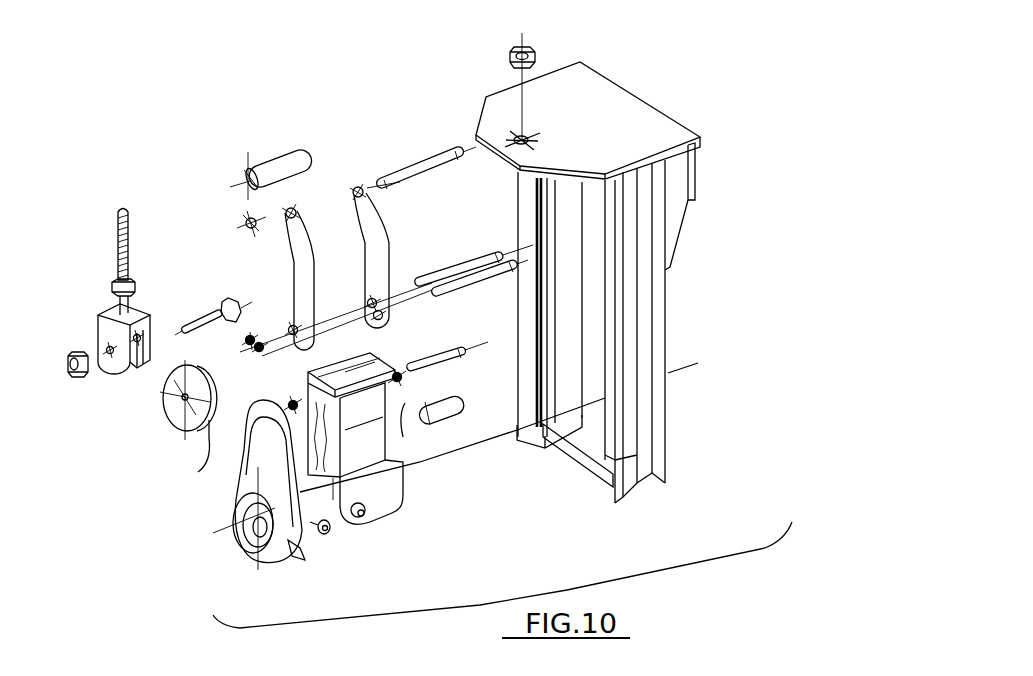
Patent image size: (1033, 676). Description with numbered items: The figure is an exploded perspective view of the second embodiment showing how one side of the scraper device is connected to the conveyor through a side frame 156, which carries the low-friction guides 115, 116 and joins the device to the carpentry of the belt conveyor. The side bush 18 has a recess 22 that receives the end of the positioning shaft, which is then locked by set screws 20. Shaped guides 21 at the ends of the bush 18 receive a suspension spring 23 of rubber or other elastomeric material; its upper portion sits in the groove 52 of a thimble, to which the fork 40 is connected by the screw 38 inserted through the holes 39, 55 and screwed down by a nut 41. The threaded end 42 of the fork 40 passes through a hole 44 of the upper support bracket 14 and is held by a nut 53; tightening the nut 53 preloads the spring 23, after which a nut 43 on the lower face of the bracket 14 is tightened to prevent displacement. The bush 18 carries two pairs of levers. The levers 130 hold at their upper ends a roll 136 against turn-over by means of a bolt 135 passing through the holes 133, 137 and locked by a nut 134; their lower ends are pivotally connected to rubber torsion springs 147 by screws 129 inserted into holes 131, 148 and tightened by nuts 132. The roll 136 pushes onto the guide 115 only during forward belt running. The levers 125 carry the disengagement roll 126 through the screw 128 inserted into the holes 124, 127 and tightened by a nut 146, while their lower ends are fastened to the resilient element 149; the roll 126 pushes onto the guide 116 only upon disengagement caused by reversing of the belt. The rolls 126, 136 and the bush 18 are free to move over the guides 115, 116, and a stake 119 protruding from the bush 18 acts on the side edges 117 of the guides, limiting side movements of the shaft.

The upper support bracket 14 is at (612, 112).
The side frame 156 is at (653, 409).
The guide 115 is at (566, 416).
The guide 116 is at (602, 438).
The side edge of the guides 117 is at (603, 438).
The nut 53 is at (533, 47).
The hole 44 is at (528, 138).
The bolt 135 is at (418, 172).
The roll 136 is at (295, 172).
The hole 137 is at (243, 172).
The nut 134 is at (245, 221).
The levers 130 is at (381, 270).
The holes 133 is at (358, 188).
The holes 131 is at (377, 313).
The nuts 132 is at (259, 343).
The screws 129 is at (475, 278).
The screw 128 is at (460, 351).
The levers 125 is at (323, 380).
The holes 124 is at (395, 368).
The nut 146 is at (290, 404).
The hole 127 is at (414, 407).
The disengagement roll 126 is at (447, 418).
The side bush 18 is at (397, 482).
The rubber torsion springs 147 is at (373, 447).
The resilient element 149 is at (398, 493).
The holes 148 is at (330, 492).
The stake 119 is at (349, 505).
The set screws 20 is at (327, 535).
The guides 21 is at (307, 560).
The suspension springs 23 is at (272, 470).
The recesses 22 is at (250, 538).
The hole 55 is at (180, 402).
The groove 52 is at (207, 448).
The fork 40 is at (105, 326).
The threaded end 42 is at (112, 245).
The nut 43 is at (130, 285).
The nut 41 is at (66, 362).
The holes 39 is at (110, 352).
The screw 38 is at (196, 320).